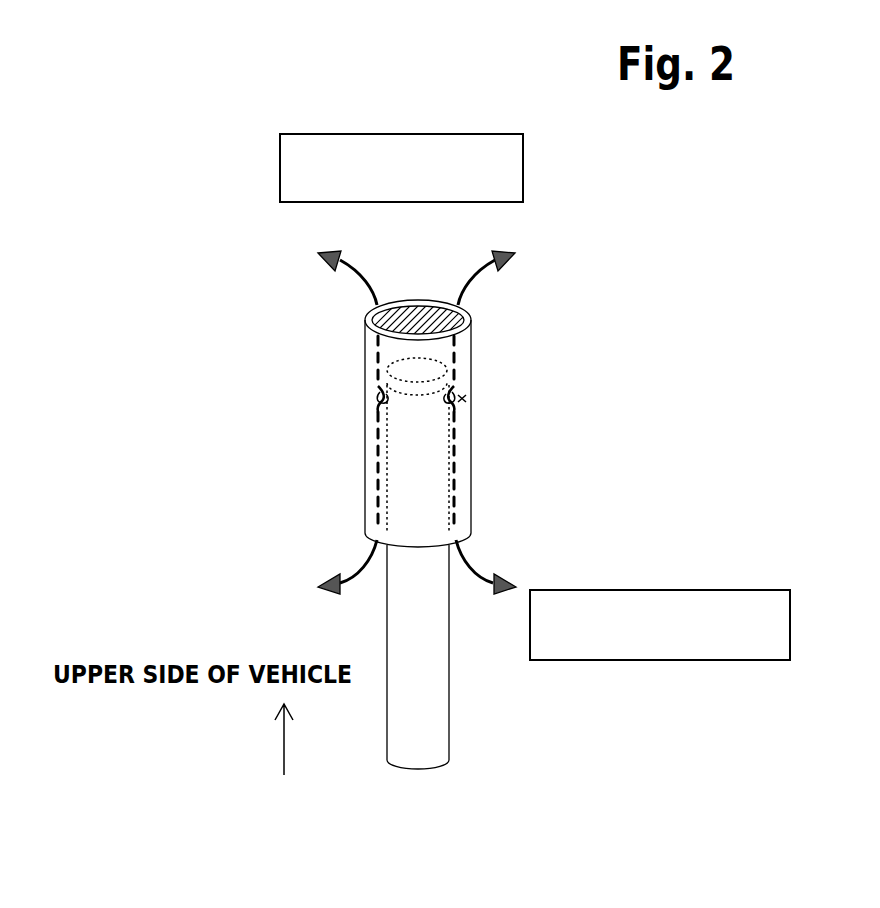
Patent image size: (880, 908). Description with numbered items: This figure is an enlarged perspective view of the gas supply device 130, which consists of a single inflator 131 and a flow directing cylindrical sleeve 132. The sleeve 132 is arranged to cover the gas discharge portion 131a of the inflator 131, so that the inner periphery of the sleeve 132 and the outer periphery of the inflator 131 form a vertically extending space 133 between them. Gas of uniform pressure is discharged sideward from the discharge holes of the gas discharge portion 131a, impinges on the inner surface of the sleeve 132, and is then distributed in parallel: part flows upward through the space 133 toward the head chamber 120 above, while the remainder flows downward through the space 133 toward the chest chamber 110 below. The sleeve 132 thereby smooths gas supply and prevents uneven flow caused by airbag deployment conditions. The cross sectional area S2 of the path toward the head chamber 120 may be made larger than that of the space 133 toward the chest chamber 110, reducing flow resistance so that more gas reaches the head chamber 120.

The head chamber 120 is at (401, 168).
The chest chamber 110 is at (660, 625).
The gas supply device 130 is at (504, 357).
The inflator 131 is at (461, 689).
The gas discharge portion 131a is at (384, 397).
The flow directing cylindrical sleeve 132 is at (485, 492).
The space 133 is at (466, 398).
The cross sectional area of flow path toward head chamber S2 is at (439, 302).